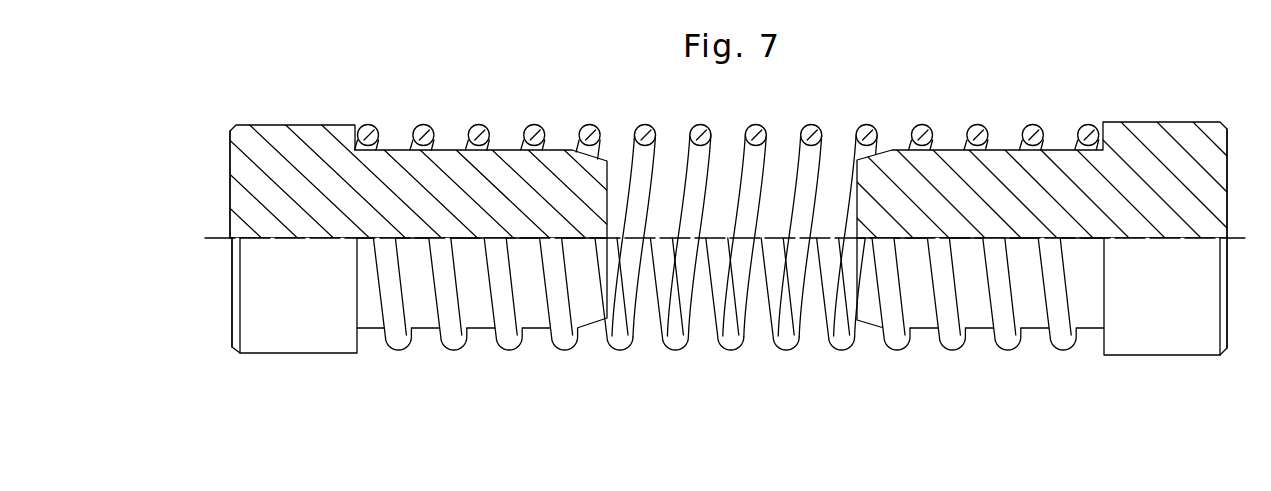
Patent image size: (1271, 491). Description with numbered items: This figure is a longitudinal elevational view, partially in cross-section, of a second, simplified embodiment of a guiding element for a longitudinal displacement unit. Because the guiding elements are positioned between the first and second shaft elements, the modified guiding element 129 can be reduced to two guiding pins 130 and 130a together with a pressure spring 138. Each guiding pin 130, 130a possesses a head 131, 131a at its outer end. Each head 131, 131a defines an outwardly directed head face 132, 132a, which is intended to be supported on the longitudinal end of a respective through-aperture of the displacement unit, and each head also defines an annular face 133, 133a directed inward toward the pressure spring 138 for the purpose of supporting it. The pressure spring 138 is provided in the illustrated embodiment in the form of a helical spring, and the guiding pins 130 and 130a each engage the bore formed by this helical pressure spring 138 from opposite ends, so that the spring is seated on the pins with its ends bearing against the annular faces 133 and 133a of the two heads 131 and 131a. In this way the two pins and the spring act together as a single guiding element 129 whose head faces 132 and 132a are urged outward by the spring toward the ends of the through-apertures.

The guiding element 129 is at (868, 102).
The guiding pin 130 is at (428, 243).
The guiding pin 130a is at (987, 227).
The head 131 is at (300, 338).
The head 131a is at (1157, 340).
The head face 132 is at (228, 313).
The head face 132a is at (1229, 189).
The annular face 133 is at (358, 342).
The annular face 133a is at (1103, 348).
The pressure spring 138 is at (622, 342).